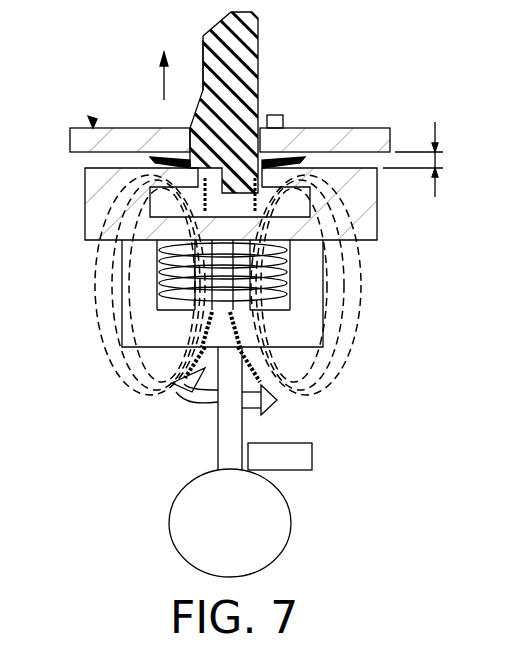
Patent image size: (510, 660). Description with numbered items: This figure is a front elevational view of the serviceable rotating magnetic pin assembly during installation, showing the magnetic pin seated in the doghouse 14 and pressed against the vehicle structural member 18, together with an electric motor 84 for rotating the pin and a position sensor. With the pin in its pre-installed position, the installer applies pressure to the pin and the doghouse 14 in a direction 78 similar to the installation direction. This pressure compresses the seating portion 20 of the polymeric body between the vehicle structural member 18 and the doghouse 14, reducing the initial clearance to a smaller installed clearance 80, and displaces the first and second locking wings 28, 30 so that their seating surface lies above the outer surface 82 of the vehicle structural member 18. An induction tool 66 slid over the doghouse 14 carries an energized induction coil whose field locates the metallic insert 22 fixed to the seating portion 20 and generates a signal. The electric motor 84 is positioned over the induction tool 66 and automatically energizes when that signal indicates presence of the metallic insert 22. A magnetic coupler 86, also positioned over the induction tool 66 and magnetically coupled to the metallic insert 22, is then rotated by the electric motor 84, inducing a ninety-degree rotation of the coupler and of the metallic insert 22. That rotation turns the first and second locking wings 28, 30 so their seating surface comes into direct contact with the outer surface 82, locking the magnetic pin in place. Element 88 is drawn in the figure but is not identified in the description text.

The doghouse 14 is at (373, 203).
The vehicle structural member 18 is at (357, 135).
The seating portion 20 is at (290, 156).
The metallic insert 22 is at (268, 122).
The first locking wing 28 is at (200, 100).
The second locking wing 30 is at (258, 105).
The induction tool 66 is at (178, 330).
The direction 78 is at (162, 88).
The installed clearance 80 is at (435, 122).
The outer surface 82 is at (92, 120).
The electric motor 84 is at (202, 543).
The magnetic coupler 86 is at (230, 433).
The sensor box 88 is at (300, 455).